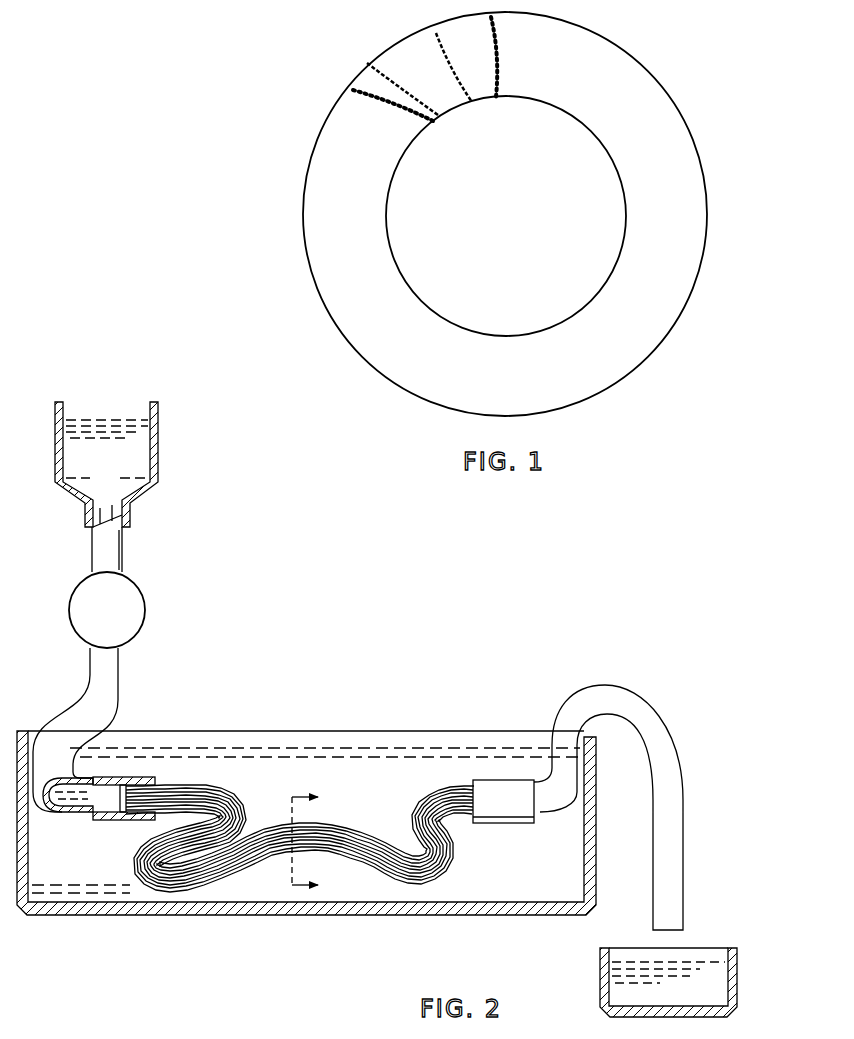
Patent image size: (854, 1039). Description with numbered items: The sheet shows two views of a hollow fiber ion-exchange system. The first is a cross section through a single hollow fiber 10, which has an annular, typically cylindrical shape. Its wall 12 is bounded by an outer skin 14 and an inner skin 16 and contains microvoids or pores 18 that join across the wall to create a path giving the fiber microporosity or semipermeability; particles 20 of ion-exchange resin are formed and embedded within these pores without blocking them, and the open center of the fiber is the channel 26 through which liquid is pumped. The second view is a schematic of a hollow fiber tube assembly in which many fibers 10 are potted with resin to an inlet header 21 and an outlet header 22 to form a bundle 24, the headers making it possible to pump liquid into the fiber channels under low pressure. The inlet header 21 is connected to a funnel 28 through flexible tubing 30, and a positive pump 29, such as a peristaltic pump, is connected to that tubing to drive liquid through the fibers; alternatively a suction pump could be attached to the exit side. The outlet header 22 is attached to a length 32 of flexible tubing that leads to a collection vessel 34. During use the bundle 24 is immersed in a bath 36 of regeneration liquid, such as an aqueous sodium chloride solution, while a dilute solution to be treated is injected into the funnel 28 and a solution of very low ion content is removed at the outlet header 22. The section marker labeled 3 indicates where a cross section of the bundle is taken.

In FIG. 1, the hollow fiber 10 is at (541, 208).
In FIG. 2, the hollow fiber 10 is at (182, 785).
In FIG. 1, the wall 12 is at (630, 50).
In FIG. 1, the outer skin 14 is at (538, 214).
In FIG. 1, the inner skin 16 is at (612, 166).
In FIG. 1, the pores 18 is at (372, 67).
In FIG. 1, the particles of ion-exchange resin 20 is at (353, 89).
In FIG. 1, the channel 26 is at (523, 249).
In FIG. 2, the funnel 28 is at (158, 434).
In FIG. 2, the flexible tubing 30 is at (124, 552).
In FIG. 2, the positive pump 29 is at (146, 607).
In FIG. 2, the inlet header 21 is at (133, 777).
In FIG. 2, the bundle 24 is at (243, 778).
In FIG. 2, the bath 36 is at (348, 757).
In FIG. 2, the outlet header 22 is at (497, 780).
In FIG. 2, the length of flexible tubing 32 is at (684, 773).
In FIG. 2, the collection vessel 34 is at (736, 956).
In FIG. 2, the section line 3- 3 is at (315, 843).